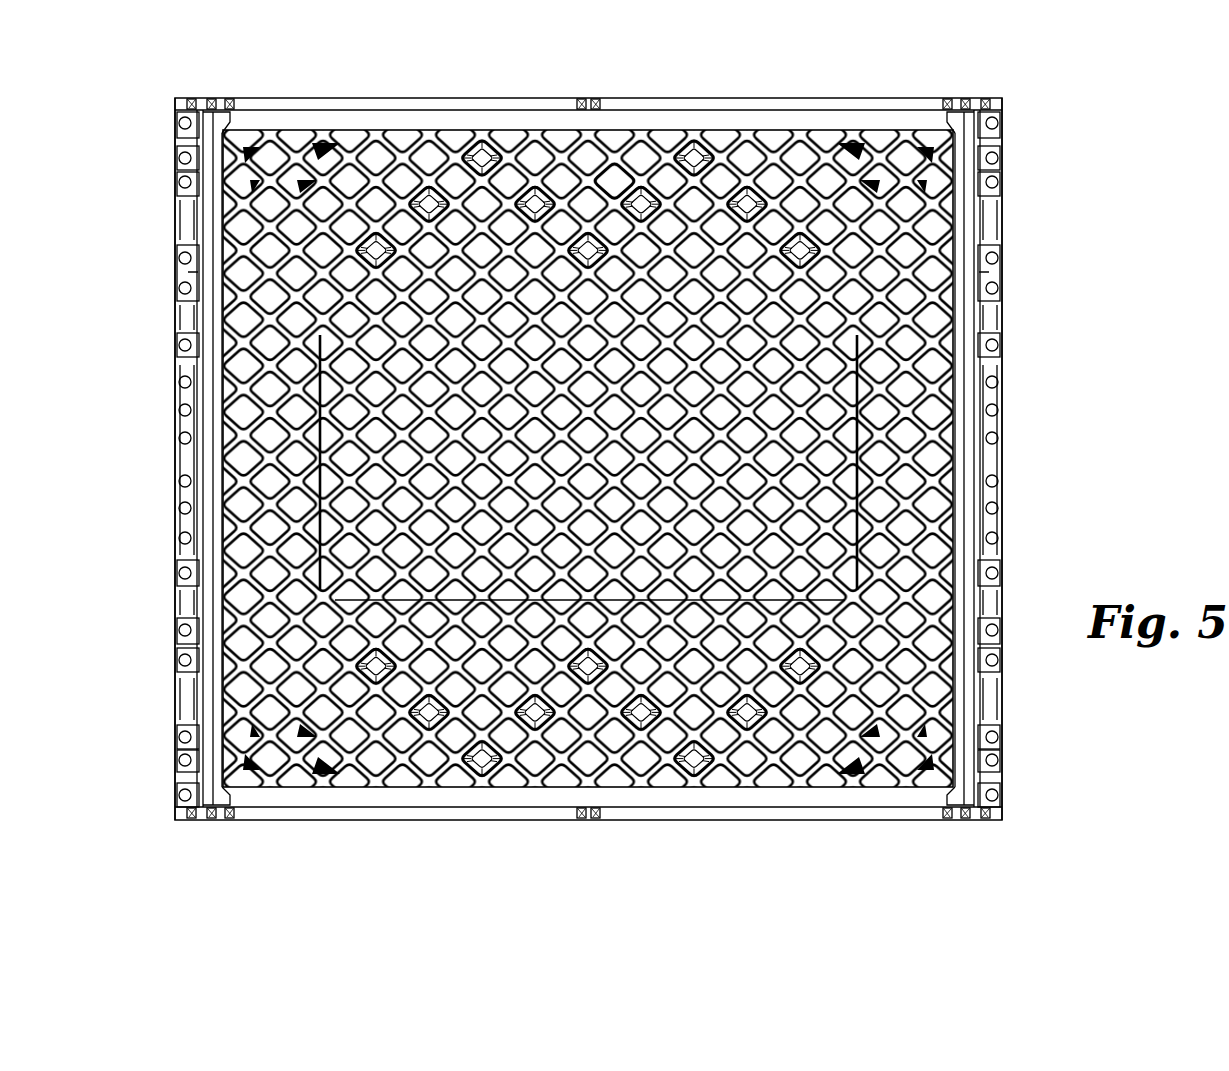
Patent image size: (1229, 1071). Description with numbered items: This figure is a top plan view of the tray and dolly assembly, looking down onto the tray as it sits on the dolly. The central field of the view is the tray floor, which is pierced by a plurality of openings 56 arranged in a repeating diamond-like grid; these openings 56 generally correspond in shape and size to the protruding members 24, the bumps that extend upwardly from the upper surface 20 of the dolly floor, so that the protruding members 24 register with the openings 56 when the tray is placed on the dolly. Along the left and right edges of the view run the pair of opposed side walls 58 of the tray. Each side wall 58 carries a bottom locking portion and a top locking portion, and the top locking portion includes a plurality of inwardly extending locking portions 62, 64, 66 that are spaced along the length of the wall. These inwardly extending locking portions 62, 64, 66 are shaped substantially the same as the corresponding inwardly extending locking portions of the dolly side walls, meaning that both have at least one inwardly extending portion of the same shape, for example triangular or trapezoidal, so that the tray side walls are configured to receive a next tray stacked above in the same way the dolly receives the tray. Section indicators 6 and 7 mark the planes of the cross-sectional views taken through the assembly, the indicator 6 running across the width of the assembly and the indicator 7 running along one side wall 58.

The upper surface 20 is at (420, 150).
The protruding members 24 is at (483, 148).
The openings 56 is at (609, 180).
The side walls 58 is at (178, 127).
The inwardly extending locking portion 62 is at (178, 473).
The inwardly extending locking portion 64 is at (178, 697).
The inwardly extending locking portion 66 is at (178, 215).
The section line 6- 6 is at (590, 96).
The section line 7- 7 is at (185, 96).